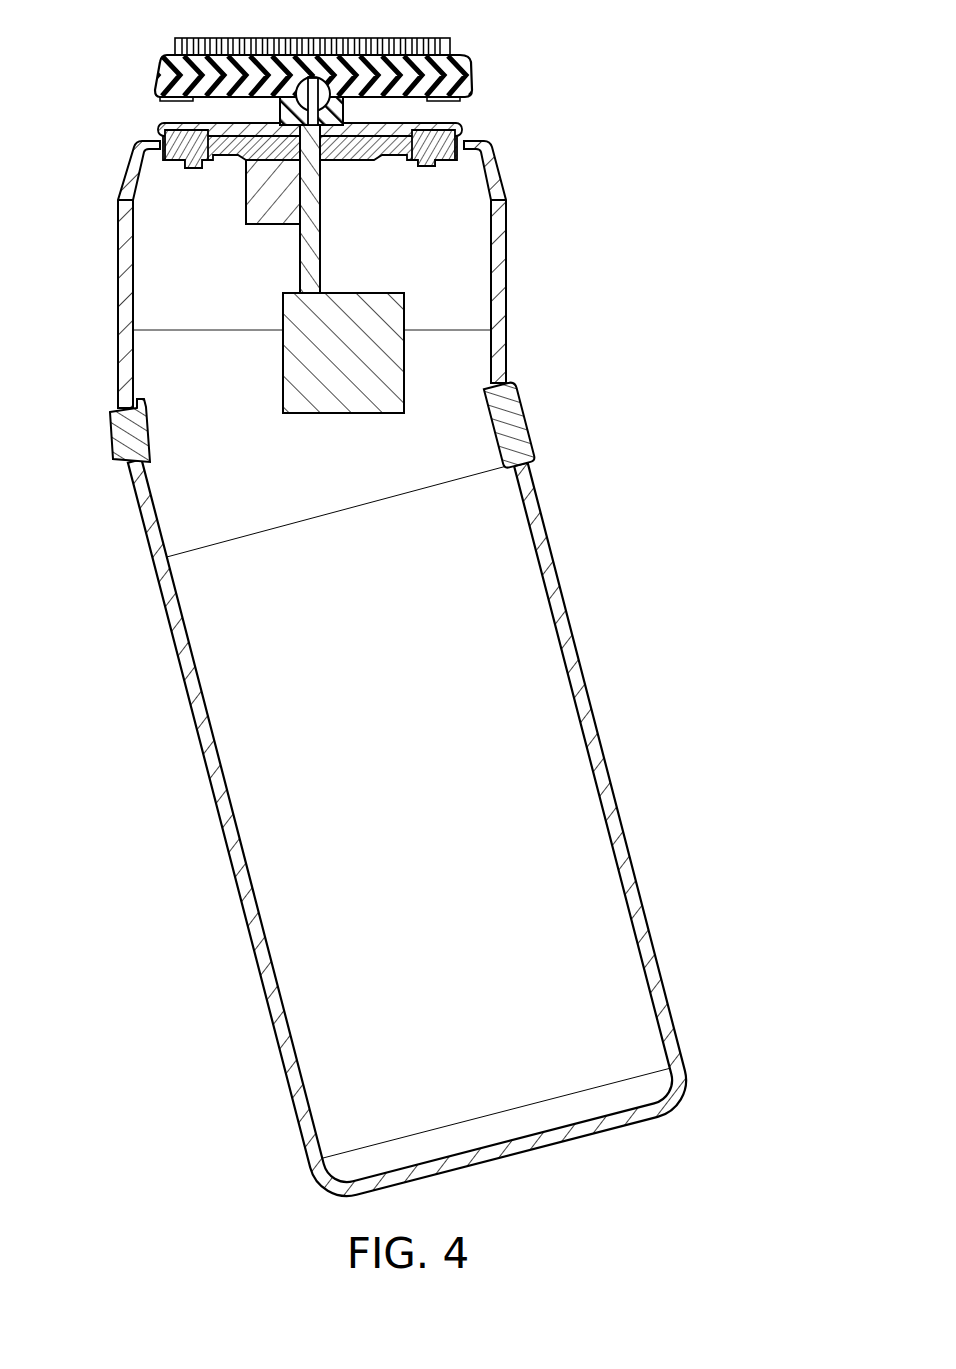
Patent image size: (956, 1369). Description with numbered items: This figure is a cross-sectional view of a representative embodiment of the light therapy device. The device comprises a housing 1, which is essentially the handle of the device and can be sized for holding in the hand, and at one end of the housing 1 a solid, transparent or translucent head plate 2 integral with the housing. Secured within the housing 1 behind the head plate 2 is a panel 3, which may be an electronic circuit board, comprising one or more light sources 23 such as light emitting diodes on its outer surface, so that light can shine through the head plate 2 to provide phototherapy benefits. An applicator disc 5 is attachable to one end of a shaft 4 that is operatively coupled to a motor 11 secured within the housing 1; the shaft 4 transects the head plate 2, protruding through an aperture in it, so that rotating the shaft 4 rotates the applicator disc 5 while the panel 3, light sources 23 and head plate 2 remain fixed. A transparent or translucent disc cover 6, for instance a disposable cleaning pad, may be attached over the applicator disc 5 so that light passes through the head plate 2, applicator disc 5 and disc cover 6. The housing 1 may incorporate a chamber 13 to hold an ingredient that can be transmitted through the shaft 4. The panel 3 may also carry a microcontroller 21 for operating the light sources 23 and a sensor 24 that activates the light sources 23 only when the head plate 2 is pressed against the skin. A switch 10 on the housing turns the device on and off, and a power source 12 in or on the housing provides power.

The housing 1 is at (171, 641).
The head plate 2 is at (178, 128).
The panel 3 is at (462, 137).
The shaft 4 is at (322, 92).
The applicator disc 5 is at (258, 83).
The disc cover 6 is at (168, 60).
The switch 10 is at (532, 420).
The motor 11 is at (272, 196).
The power source 12 is at (110, 440).
The chamber 13 is at (388, 318).
The microcontroller 21 is at (432, 160).
The light sources 23 is at (190, 133).
The sensor 24 is at (440, 128).